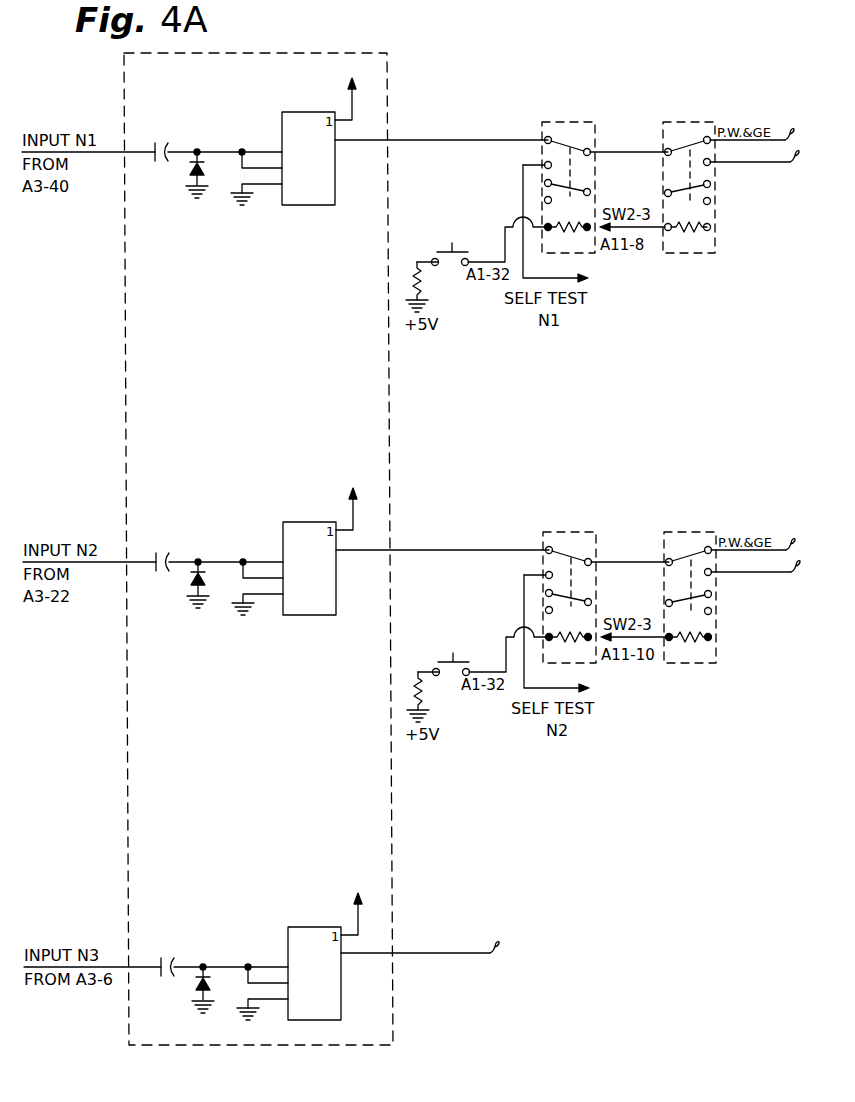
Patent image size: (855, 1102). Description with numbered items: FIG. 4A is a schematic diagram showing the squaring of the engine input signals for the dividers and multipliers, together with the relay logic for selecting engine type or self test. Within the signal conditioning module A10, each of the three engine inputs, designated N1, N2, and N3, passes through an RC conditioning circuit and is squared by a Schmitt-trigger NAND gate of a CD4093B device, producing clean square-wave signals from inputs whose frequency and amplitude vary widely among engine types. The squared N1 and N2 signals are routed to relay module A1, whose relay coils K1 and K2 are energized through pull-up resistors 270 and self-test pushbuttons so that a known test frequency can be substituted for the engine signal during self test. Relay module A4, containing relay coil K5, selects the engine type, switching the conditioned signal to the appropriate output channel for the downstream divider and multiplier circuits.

The input conditioning module A10 is at (258, 564).
The relay module A1 is at (596, 379).
The relay module A4 is at (731, 378).
The relay coil K1 is at (568, 238).
The relay coil K2 is at (569, 648).
The relay coil K5 is at (688, 443).
The 270 ohm pull-up resistor 270 is at (430, 492).
The CD4093B Schmitt trigger NAND gate CD4093B is at (307, 543).